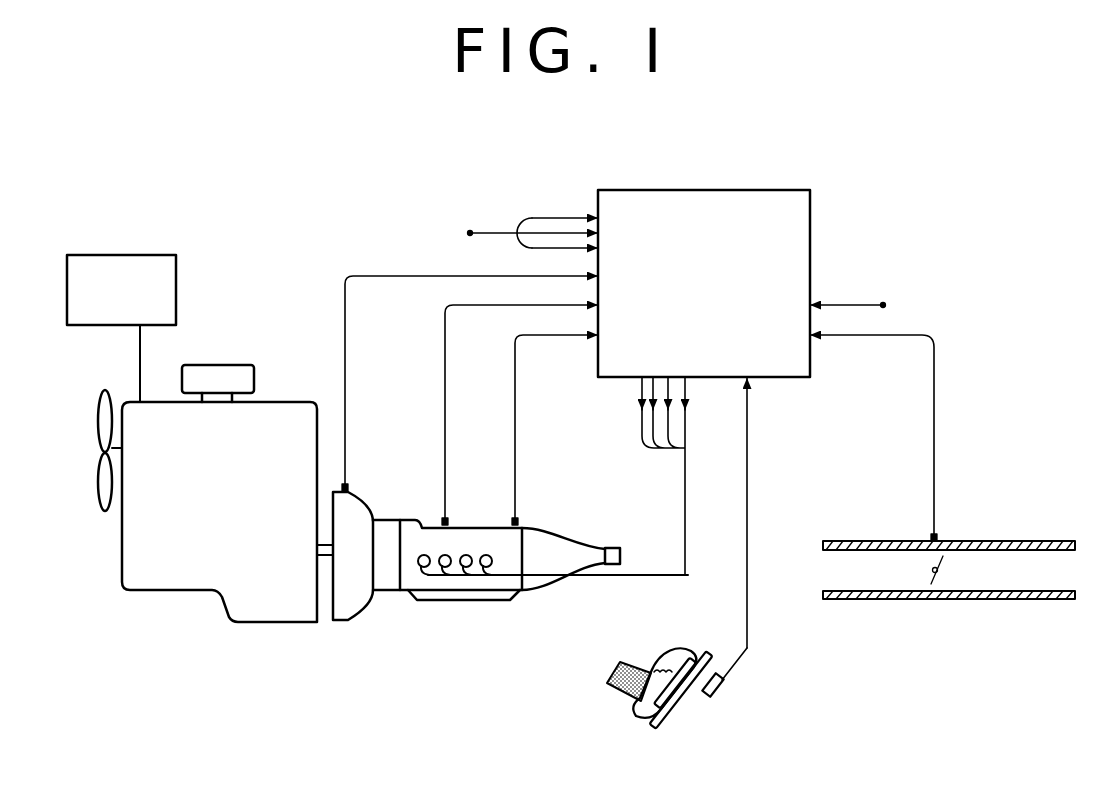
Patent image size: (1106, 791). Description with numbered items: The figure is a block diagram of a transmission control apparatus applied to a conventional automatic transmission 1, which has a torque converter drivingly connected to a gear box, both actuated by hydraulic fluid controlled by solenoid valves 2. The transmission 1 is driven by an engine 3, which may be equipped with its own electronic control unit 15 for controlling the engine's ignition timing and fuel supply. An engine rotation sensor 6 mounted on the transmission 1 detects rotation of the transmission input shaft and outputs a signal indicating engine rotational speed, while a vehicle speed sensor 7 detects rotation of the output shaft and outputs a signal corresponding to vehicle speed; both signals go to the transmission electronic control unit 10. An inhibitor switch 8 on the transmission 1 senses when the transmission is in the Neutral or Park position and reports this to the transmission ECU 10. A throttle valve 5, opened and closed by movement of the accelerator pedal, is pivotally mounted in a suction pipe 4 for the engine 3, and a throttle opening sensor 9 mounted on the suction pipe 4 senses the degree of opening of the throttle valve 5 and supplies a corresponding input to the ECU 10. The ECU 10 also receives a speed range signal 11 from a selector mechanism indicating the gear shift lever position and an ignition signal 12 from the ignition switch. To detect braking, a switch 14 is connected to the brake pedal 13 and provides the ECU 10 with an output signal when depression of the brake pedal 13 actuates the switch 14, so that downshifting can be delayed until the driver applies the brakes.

The automatic transmission 1 is at (465, 600).
The solenoid valves 2 is at (418, 562).
The engine 3 is at (262, 623).
The suction pipe 4 is at (1040, 541).
The throttle valve 5 is at (945, 592).
The engine rotation sensor 6 is at (350, 490).
The vehicle speed sensor 7 is at (520, 522).
The inhibitor switch 8 is at (450, 522).
The throttle opening sensor 9 is at (938, 538).
The transmission electronic control unit 10 is at (810, 218).
The speed range signal 11 is at (470, 233).
The ignition signal 12 is at (883, 305).
The brake pedal 13 is at (668, 720).
The switch 14 is at (725, 690).
The engine electronic control unit 15 is at (160, 255).